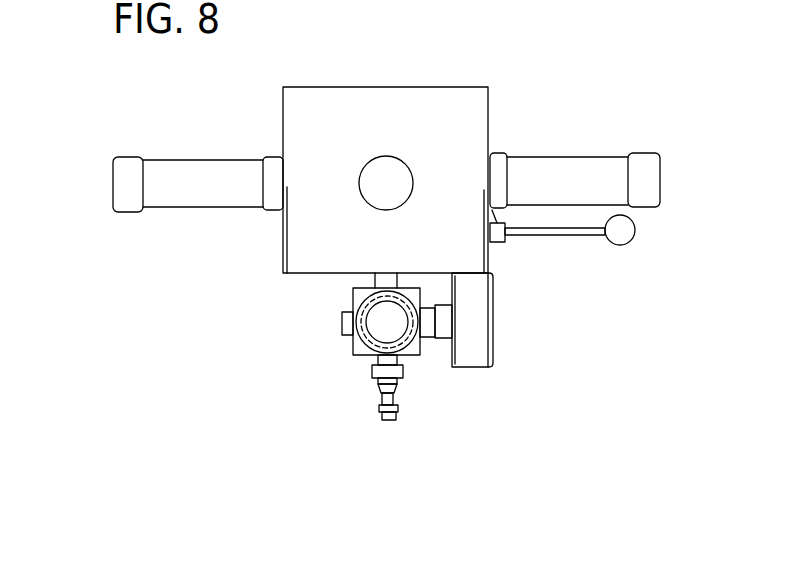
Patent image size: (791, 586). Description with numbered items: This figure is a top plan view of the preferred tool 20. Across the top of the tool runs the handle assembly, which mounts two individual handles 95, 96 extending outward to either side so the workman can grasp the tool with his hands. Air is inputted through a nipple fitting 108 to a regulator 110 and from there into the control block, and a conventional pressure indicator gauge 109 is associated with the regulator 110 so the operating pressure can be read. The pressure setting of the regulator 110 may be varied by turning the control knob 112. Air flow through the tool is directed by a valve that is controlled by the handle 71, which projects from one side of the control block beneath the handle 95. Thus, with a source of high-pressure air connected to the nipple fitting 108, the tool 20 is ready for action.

The tool 20 is at (125, 303).
The handle 96 is at (208, 168).
The handle 95 is at (565, 158).
The handle 71 is at (597, 258).
The regulator 110 is at (313, 317).
The control knob 112 is at (380, 328).
The pressure indicator gauge 109 is at (497, 368).
The nipple fitting 108 is at (380, 410).